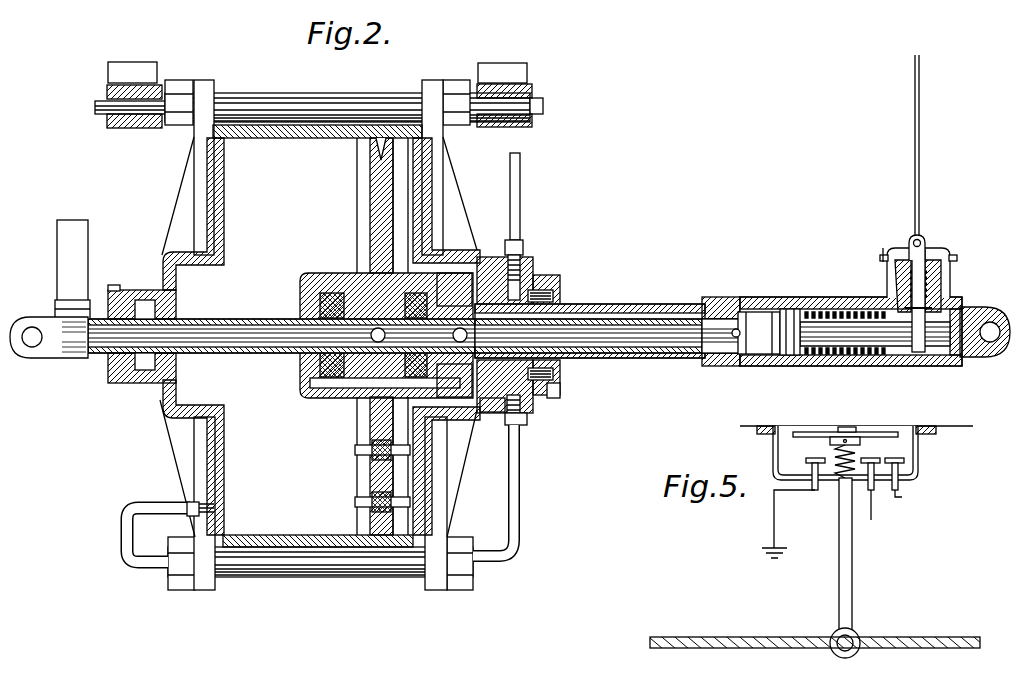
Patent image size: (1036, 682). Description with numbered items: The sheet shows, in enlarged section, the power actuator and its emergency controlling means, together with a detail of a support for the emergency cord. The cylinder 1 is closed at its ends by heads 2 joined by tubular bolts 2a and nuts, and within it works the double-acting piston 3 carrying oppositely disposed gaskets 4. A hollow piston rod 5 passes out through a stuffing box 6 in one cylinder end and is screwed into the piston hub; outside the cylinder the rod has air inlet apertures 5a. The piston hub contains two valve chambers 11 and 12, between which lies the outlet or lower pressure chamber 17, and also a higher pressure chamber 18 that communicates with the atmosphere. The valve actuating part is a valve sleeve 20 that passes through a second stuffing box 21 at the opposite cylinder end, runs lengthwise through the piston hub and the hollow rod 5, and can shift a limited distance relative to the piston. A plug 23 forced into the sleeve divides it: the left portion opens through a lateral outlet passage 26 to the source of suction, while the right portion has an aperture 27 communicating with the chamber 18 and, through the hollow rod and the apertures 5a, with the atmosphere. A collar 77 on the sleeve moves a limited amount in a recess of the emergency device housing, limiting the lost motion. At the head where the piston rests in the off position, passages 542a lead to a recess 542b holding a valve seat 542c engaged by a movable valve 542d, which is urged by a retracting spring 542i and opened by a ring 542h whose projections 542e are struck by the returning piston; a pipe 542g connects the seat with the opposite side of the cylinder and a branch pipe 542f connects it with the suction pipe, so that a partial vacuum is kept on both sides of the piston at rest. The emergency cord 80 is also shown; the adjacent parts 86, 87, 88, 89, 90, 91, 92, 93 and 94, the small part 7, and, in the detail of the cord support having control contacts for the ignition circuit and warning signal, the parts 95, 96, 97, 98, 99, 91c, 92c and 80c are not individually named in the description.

In FIG. 2, the cylinder 1 is at (298, 130).
In FIG. 2, the heads 2 is at (303, 327).
In FIG. 2, the tubular bolts 2a is at (258, 97).
In FIG. 2, the double-acting piston 3 is at (370, 186).
In FIG. 2, the gaskets 4 is at (388, 145).
In FIG. 2, the hollow piston rod 5 is at (647, 358).
In FIG. 2, the air inlet apertures 5a is at (745, 302).
In FIG. 2, the stuffing box 6 is at (558, 386).
In FIG. 2, the nut 7 is at (108, 290).
In FIG. 2, the valve chamber 11 is at (327, 275).
In FIG. 2, the valve chamber 12 is at (440, 270).
In FIG. 2, the outlet chamber or lower pressure chamber 17 is at (352, 390).
In FIG. 2, the higher pressure chamber 18 is at (478, 412).
In FIG. 2, the valve actuating sleeve 20 is at (268, 355).
In FIG. 2, the stuffing box 21 is at (110, 367).
In FIG. 2, the plug 23 is at (386, 336).
In FIG. 2, the lateral outlet passage 26 is at (82, 230).
In FIG. 2, the aperture 27 is at (468, 336).
In FIG. 2, the collar 77 is at (762, 367).
In FIG. 2, the emergency cord 80 is at (919, 162).
In FIG. 2, the cylinder 86 is at (950, 296).
In FIG. 2, the spring 87 is at (947, 274).
In FIG. 2, the sleeve 88 is at (893, 276).
In FIG. 2, the plunger 89 is at (922, 262).
In FIG. 2, the switch housing 90 is at (903, 248).
In FIG. 2, the sleeve 91 is at (953, 262).
In FIG. 2, the clip 92 is at (882, 260).
In FIG. 2, the clip 93 is at (952, 254).
In FIG. 2, the pin 94 is at (883, 254).
In FIG. 2, the passages 542a is at (496, 412).
In FIG. 2, the recess 542b is at (525, 270).
In FIG. 2, the valve seat 542c is at (532, 402).
In FIG. 2, the movable valve 542d is at (555, 296).
In FIG. 2, the projections 542e is at (497, 300).
In FIG. 2, the branch pipe 542f is at (521, 186).
In FIG. 2, the pipe 542g is at (519, 526).
In FIG. 2, the ring 542h is at (524, 420).
In FIG. 2, the retracting spring 542i is at (556, 392).
In FIG. 5, the bar 80c is at (940, 638).
In FIG. 5, the terminal 91c is at (880, 454).
In FIG. 5, the terminal 92c is at (903, 460).
In FIG. 5, the rod 95 is at (853, 588).
In FIG. 5, the box 96 is at (918, 472).
In FIG. 5, the spring 97 is at (843, 480).
In FIG. 5, the plate 98 is at (812, 432).
In FIG. 5, the terminal 99 is at (812, 459).